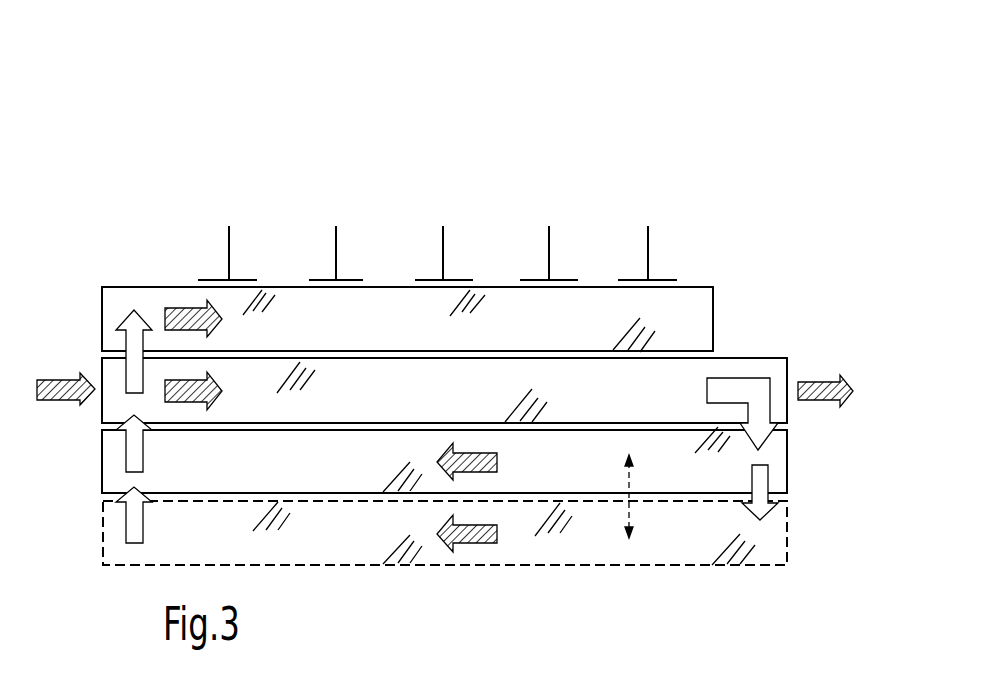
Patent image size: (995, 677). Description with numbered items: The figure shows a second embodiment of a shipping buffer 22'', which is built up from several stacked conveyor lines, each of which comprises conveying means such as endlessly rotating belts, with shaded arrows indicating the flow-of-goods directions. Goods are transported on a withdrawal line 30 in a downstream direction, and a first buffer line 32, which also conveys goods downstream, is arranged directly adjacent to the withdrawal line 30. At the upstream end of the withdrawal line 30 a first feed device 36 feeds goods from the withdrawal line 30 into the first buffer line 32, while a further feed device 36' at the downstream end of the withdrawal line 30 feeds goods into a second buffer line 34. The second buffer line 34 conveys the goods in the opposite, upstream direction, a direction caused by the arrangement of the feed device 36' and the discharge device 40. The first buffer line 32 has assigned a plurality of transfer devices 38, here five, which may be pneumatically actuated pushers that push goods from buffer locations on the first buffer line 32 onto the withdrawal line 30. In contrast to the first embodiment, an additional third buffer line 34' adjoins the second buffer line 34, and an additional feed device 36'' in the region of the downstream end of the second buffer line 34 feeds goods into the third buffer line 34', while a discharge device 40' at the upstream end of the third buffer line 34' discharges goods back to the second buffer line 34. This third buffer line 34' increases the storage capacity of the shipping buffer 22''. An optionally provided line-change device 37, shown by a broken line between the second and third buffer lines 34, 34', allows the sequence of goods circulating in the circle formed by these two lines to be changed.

The shipping buffer 22'' is at (442, 326).
The withdrawal line 30 is at (470, 398).
The first buffer line 32 is at (357, 330).
The second buffer line 34 is at (444, 460).
The third buffer line 34' is at (445, 533).
The first feed device 36 is at (151, 319).
The feed device 36' is at (756, 371).
The additional feed device 36'' is at (794, 485).
The line-change device 37 is at (632, 488).
The transfer devices 38 is at (230, 243).
The discharge device 40 is at (164, 443).
The discharge device 40' is at (170, 515).